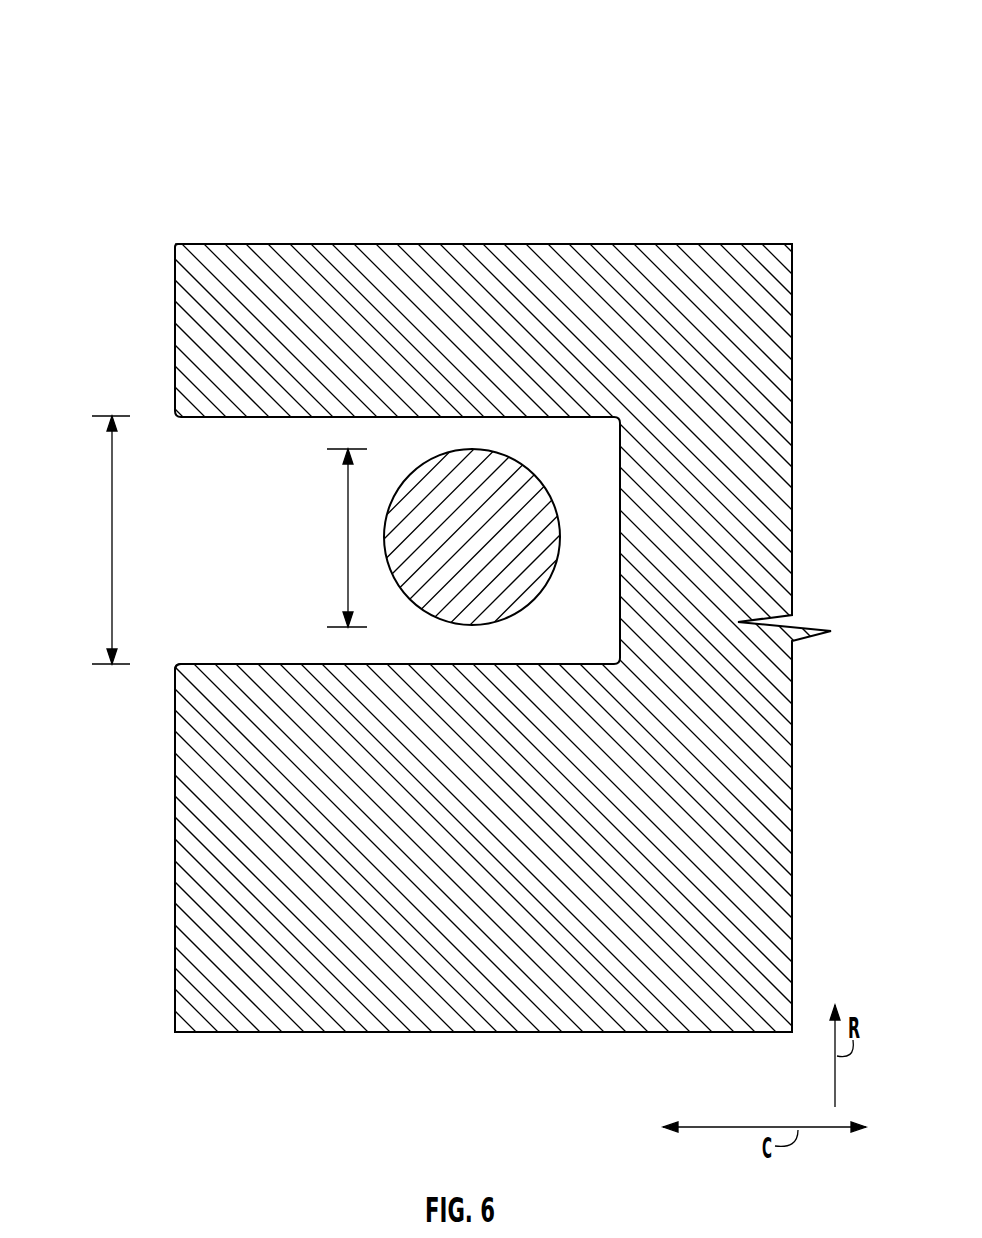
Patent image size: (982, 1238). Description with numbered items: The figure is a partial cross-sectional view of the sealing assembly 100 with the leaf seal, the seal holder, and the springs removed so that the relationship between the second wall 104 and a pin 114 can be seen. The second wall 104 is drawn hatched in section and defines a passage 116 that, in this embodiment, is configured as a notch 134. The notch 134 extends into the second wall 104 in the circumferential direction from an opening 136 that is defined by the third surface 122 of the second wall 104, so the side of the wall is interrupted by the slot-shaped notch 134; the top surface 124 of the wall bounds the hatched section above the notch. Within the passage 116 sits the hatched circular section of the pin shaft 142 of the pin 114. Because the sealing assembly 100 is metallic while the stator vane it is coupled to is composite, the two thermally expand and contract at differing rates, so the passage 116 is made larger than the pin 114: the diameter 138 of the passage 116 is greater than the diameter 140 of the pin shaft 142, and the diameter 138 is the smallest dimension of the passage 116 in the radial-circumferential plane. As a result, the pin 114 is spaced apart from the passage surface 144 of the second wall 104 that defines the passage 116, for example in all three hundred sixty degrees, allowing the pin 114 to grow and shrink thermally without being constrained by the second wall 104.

The sealing assembly 100 is at (144, 124).
The second wall 104 is at (643, 244).
The pin 114 is at (583, 522).
The passage 116 is at (265, 512).
The notch 134 is at (265, 512).
The third surface 122 is at (175, 297).
The top surface 124 is at (485, 244).
The opening 136 is at (177, 500).
The diameter of passage 138 is at (112, 505).
The diameter of pin shaft 140 is at (348, 537).
The pin shaft 142 is at (512, 458).
The passage surface 144 is at (207, 665).